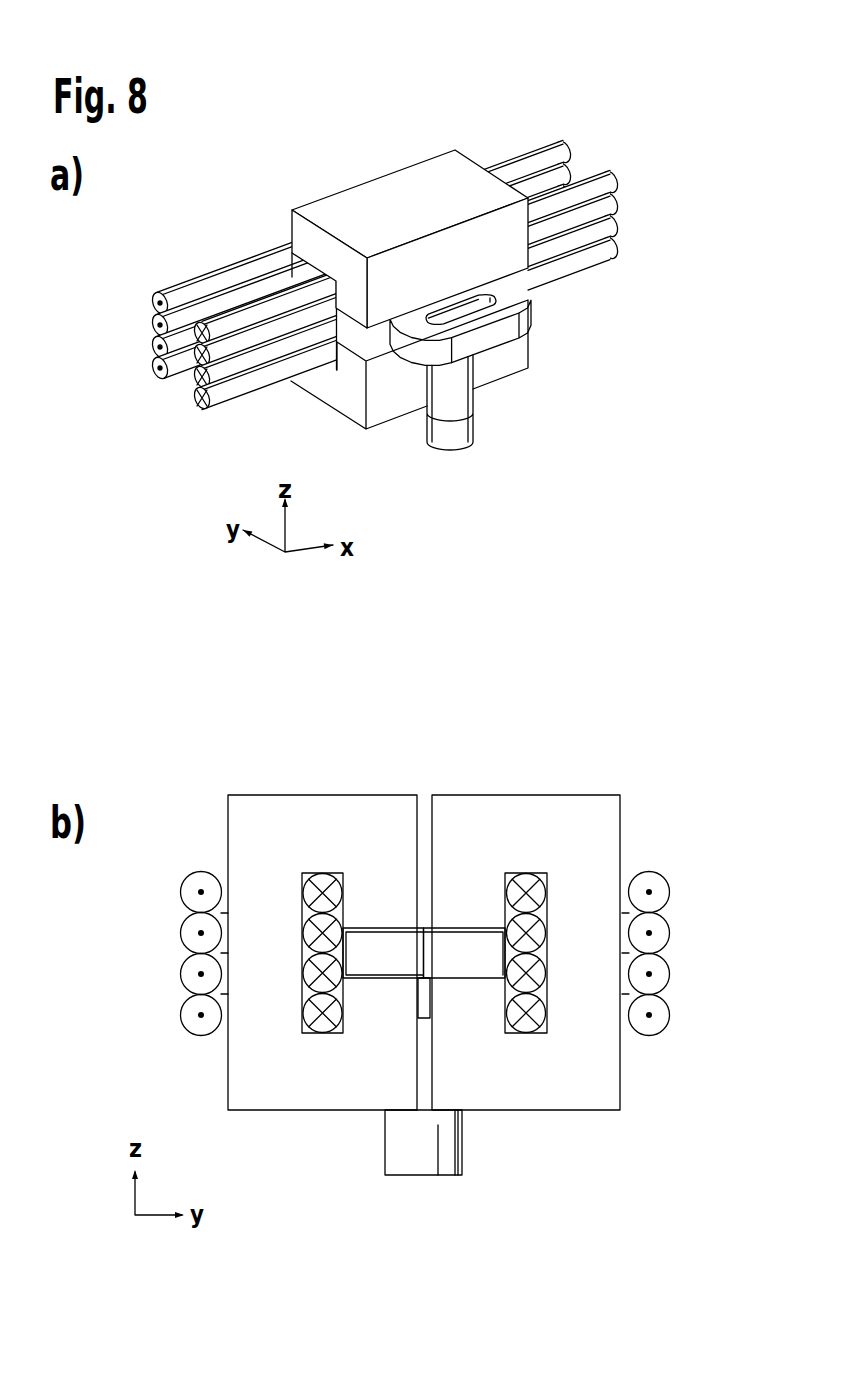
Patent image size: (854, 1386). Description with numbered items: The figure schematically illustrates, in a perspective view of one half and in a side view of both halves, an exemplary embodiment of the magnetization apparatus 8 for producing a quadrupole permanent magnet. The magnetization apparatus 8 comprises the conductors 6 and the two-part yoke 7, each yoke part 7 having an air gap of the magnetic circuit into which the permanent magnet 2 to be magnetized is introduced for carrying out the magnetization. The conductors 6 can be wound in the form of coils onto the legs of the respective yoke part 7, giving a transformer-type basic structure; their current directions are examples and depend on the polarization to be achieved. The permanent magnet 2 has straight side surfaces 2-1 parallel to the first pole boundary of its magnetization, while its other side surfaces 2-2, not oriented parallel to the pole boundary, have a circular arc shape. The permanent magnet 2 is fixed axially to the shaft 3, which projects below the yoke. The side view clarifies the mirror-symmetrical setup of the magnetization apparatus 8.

The magnetization apparatus 8 is at (370, 168).
The two-part yoke 7 is at (463, 166).
The conductors 6 is at (243, 320).
The permanent magnet 2 is at (527, 323).
The side surfaces 2-1 is at (505, 333).
The other side surfaces 2-2 is at (410, 350).
The shaft 3 is at (467, 423).